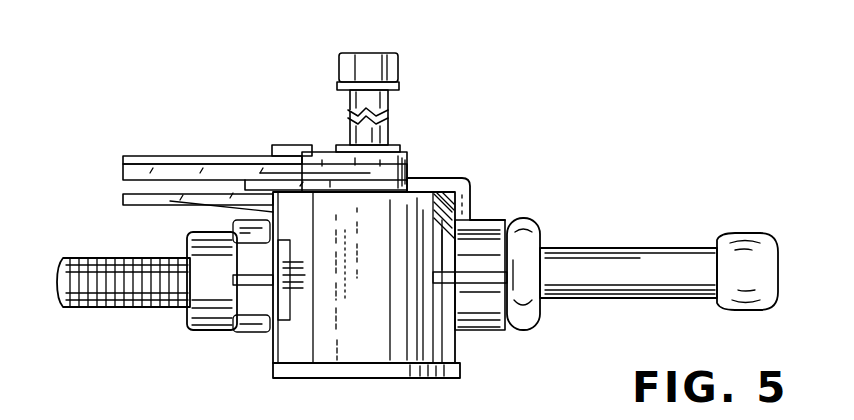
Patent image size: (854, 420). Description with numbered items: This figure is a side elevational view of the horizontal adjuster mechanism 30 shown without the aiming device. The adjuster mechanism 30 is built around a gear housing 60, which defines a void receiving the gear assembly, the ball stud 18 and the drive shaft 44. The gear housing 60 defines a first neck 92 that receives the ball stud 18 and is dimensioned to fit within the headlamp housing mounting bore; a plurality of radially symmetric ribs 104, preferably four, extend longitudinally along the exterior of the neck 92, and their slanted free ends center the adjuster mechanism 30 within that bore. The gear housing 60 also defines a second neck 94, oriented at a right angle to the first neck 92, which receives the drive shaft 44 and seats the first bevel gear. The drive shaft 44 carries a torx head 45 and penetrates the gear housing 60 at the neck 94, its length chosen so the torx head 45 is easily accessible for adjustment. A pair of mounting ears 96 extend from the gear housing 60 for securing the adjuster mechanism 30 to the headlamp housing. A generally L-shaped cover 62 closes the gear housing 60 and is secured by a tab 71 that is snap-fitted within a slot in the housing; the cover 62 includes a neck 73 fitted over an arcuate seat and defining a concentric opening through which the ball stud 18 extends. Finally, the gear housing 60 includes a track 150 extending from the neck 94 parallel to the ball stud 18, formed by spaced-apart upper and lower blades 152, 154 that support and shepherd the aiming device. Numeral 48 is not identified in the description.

The ball stud 18 is at (660, 248).
The adjuster mechanism 30 is at (655, 183).
The drive shaft 44 is at (348, 102).
The torx head 45 is at (370, 60).
The spacer block 48 is at (278, 145).
The gear housing 60 is at (466, 336).
The cover 62 is at (221, 338).
The tab 71 is at (460, 355).
The neck 73 is at (185, 322).
The first neck 92 is at (492, 215).
The second neck 94 is at (410, 165).
The mounting ears 96 is at (317, 347).
The ribs 104 is at (495, 325).
The track 150 is at (125, 145).
The upper blade 152 is at (185, 156).
The lower blade 154 is at (160, 205).